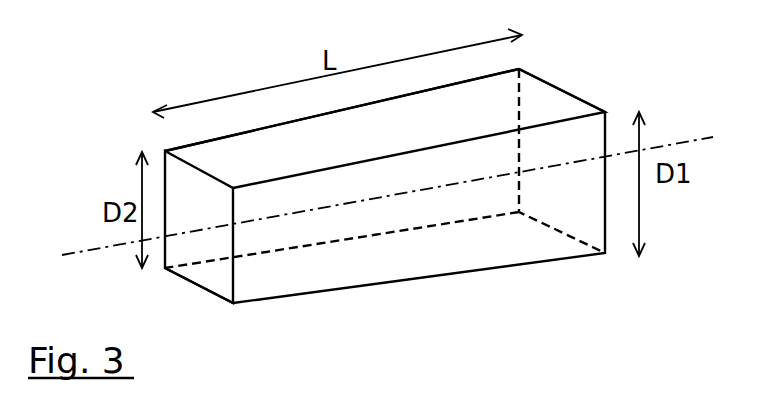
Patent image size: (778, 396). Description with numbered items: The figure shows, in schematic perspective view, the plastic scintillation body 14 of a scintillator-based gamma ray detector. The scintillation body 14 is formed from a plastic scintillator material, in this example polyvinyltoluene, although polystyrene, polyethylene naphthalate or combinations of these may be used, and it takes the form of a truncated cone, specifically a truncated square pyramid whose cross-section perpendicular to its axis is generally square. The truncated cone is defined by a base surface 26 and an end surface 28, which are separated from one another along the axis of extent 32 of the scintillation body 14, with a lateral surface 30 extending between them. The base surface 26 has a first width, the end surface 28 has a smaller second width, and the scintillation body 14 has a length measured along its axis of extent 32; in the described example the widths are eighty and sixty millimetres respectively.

The plastic scintillation body 14 is at (280, 293).
The base surface 26 is at (583, 102).
The end surface 28 is at (188, 281).
The lateral surface 30 is at (443, 128).
The axis of extent 32 is at (653, 148).